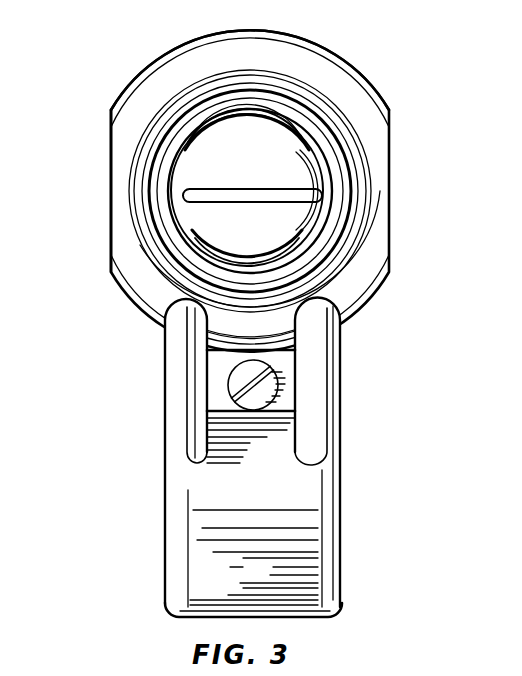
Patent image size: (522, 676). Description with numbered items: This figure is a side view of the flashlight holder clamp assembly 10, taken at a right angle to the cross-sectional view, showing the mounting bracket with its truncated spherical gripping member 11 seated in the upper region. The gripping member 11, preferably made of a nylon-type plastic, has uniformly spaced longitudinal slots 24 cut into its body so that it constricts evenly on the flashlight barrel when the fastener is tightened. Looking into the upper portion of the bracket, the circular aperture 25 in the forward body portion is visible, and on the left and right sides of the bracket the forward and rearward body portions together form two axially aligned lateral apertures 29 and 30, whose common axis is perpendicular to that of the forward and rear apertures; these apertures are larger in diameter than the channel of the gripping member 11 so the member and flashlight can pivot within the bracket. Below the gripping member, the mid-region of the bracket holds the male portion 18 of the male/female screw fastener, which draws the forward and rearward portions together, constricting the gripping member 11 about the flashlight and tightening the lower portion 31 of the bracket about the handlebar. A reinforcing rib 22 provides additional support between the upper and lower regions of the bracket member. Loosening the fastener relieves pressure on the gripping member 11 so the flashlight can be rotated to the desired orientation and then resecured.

The flashlight holder clamp assembly 10 is at (98, 63).
The truncated spherical gripping member 11 is at (238, 145).
The male portion of screw fastener 18 is at (226, 389).
The reinforcing rib 22 is at (342, 398).
The longitudinal slots 24 is at (323, 196).
The aperture 25 is at (298, 169).
The lateral aperture 29 is at (387, 110).
The lateral aperture 30 is at (107, 130).
The lower portion of mounting bracket 31 is at (300, 537).